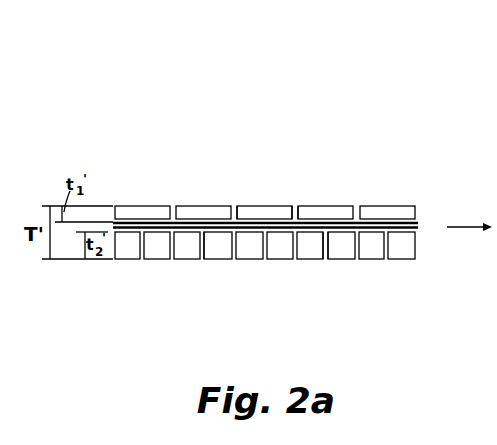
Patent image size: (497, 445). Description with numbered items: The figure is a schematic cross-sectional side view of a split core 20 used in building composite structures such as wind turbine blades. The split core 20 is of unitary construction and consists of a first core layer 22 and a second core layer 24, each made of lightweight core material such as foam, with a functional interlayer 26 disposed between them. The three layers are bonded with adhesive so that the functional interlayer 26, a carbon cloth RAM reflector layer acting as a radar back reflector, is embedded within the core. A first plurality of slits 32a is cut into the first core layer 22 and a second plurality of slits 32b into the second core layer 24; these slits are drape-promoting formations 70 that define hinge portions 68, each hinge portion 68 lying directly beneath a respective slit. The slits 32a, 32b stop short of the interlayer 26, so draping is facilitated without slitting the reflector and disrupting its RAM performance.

The split core 20 is at (279, 101).
The first core layer 22 is at (328, 213).
The second core layer 24 is at (371, 250).
The functional interlayer 26 is at (418, 223).
The first plurality of slits 32a is at (170, 206).
The second plurality of slits 32b is at (170, 261).
The hinge portions 68 is at (238, 214).
The drape-promoting formations 70 is at (296, 206).